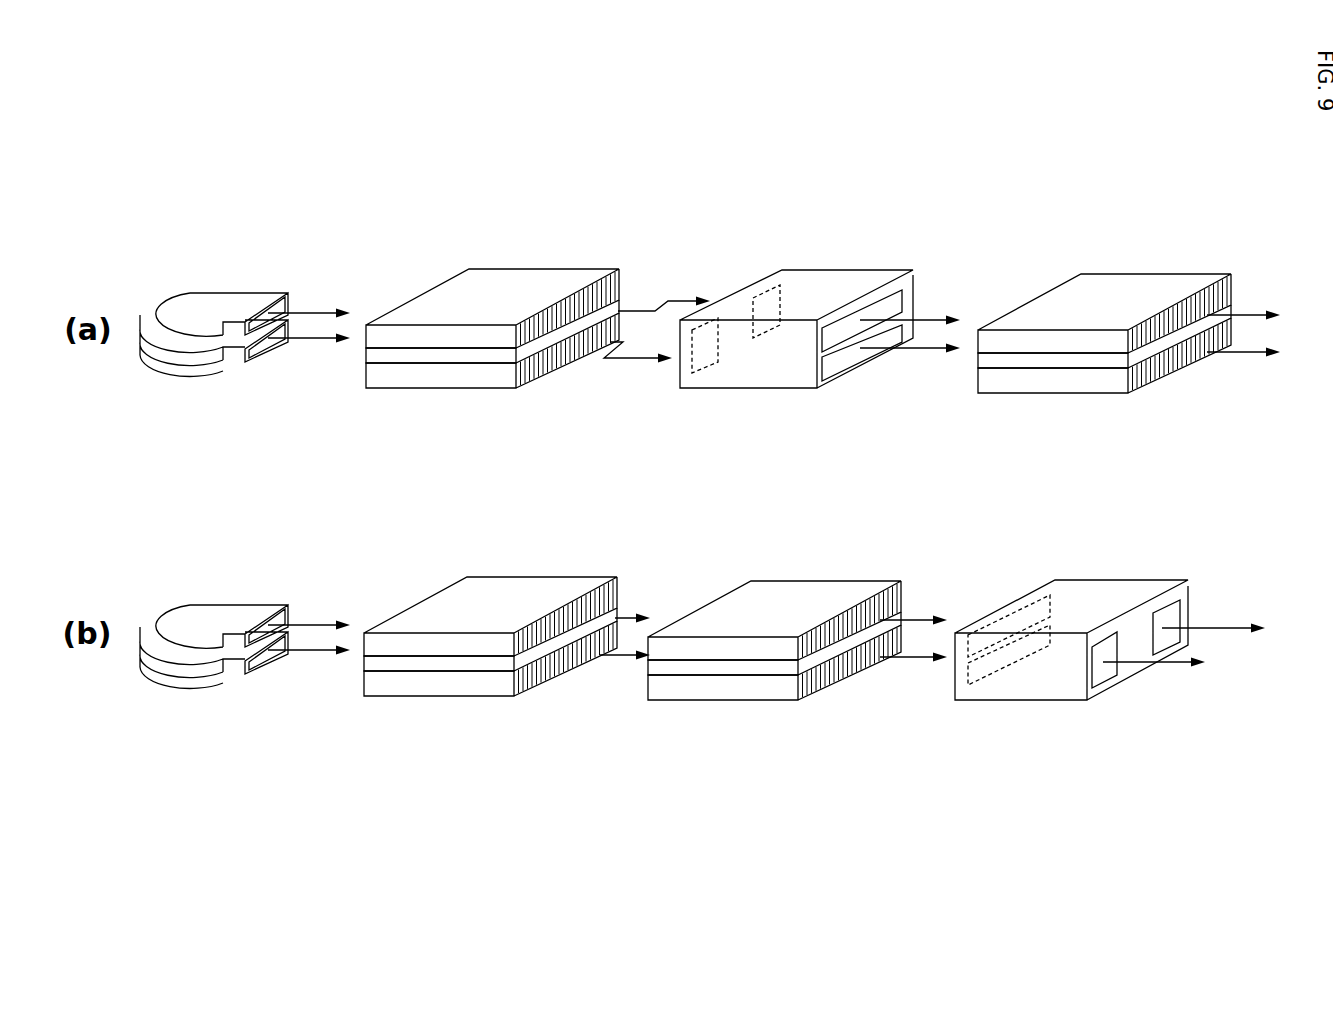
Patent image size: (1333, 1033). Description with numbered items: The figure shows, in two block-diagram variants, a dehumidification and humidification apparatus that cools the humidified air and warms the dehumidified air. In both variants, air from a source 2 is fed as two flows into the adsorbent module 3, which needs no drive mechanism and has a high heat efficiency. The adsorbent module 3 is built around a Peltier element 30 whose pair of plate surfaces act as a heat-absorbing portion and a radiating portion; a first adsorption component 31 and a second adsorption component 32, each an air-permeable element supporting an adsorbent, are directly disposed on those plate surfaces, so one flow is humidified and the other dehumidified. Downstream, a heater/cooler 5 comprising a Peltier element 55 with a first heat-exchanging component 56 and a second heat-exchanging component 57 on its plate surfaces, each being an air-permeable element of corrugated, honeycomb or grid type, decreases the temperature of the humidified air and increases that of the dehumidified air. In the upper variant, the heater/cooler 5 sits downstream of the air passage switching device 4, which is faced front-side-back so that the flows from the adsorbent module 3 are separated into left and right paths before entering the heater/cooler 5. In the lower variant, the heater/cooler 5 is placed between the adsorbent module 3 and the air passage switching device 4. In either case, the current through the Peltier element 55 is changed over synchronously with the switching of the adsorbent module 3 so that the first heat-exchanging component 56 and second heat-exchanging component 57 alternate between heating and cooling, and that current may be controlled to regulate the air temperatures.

The light source (LED) 2 is at (178, 312).
The adsorbent module 3 is at (486, 479).
The first adsorption component 31 is at (430, 336).
The Peltier element 30 is at (453, 357).
The second adsorption component 32 is at (475, 378).
The air passage switching device 4 is at (823, 285).
The heater/cooler 5 is at (933, 484).
The first heat-exchanging component 56 is at (1042, 340).
The Peltier element 55 is at (1065, 361).
The second heat-exchanging component 57 is at (1085, 383).